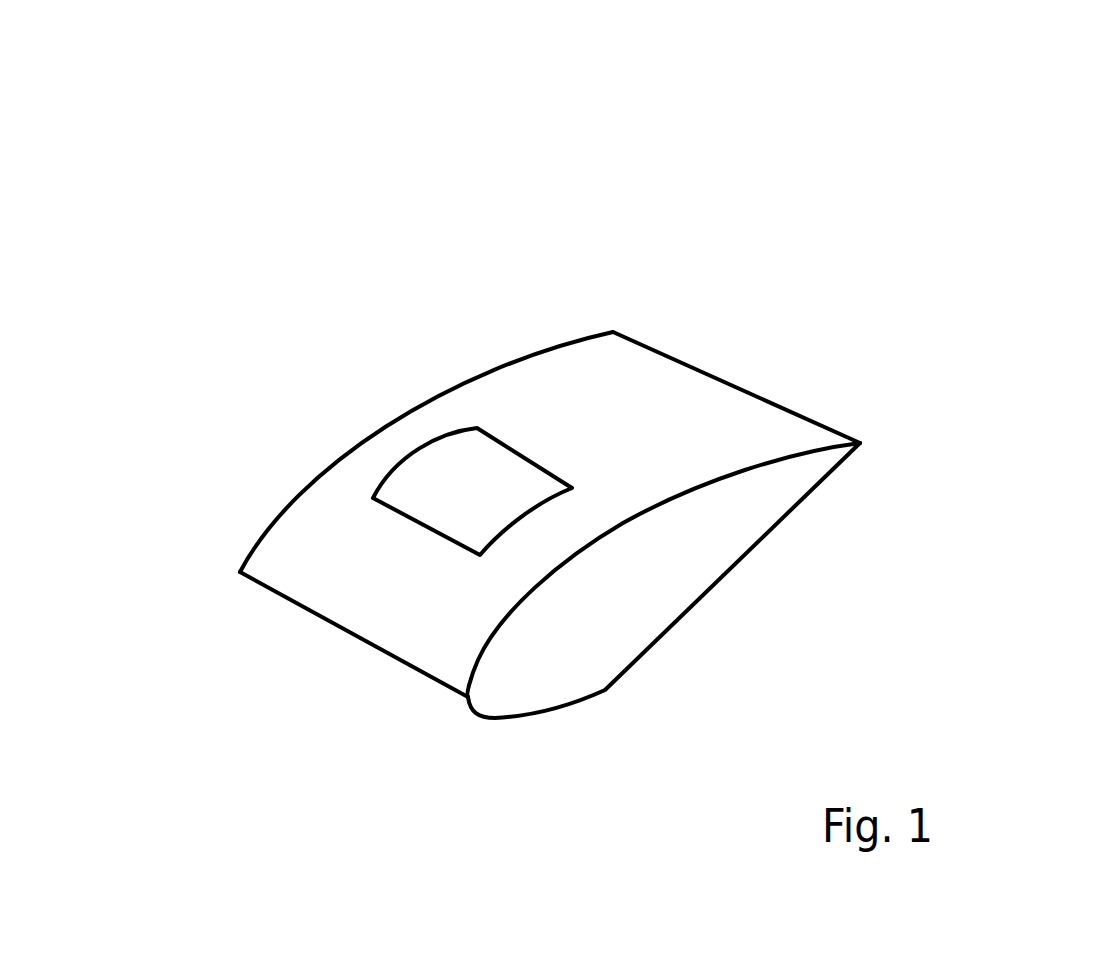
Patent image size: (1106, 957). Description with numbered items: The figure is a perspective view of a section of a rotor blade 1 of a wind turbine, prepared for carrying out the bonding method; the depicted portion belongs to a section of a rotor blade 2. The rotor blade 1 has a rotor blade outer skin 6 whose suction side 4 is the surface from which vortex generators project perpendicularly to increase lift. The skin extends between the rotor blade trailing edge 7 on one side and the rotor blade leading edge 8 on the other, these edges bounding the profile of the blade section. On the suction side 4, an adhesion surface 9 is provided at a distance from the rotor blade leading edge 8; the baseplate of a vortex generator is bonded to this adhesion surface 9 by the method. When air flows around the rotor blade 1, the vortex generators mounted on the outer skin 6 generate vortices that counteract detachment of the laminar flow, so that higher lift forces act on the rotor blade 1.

The rotor blade 1 is at (670, 497).
The section of a rotor blade 2 is at (677, 318).
The suction side 4 is at (620, 525).
The rotor blade outer skin 6 is at (472, 408).
The rotor blade trailing edge 7 is at (755, 397).
The rotor blade leading edge 8 is at (322, 618).
The adhesion surface 9 is at (499, 472).